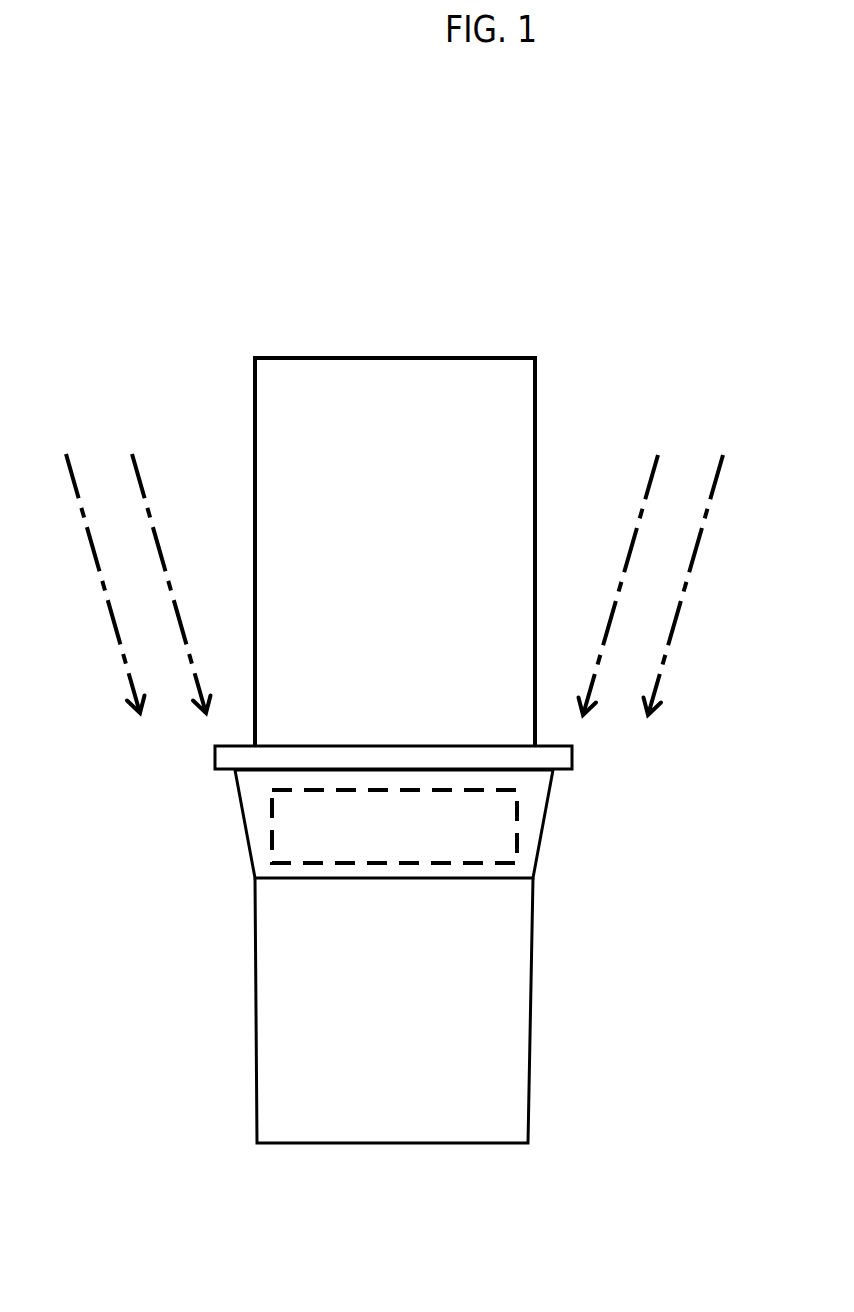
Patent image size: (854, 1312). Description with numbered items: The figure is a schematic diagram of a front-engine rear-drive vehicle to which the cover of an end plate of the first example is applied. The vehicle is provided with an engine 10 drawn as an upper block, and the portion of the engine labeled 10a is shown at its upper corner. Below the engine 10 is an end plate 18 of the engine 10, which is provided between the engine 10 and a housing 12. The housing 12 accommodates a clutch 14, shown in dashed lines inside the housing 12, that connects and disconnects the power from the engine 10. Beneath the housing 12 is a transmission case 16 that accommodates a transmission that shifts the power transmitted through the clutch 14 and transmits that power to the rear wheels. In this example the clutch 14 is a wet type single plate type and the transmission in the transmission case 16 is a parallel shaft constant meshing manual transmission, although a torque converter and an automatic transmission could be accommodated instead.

The engine 10 is at (585, 290).
The upper block (light receiving portion) 10a is at (502, 368).
The end plate 18 is at (605, 779).
The housing 12 is at (528, 875).
The clutch 14 is at (270, 826).
The transmission case 16 is at (515, 1038).